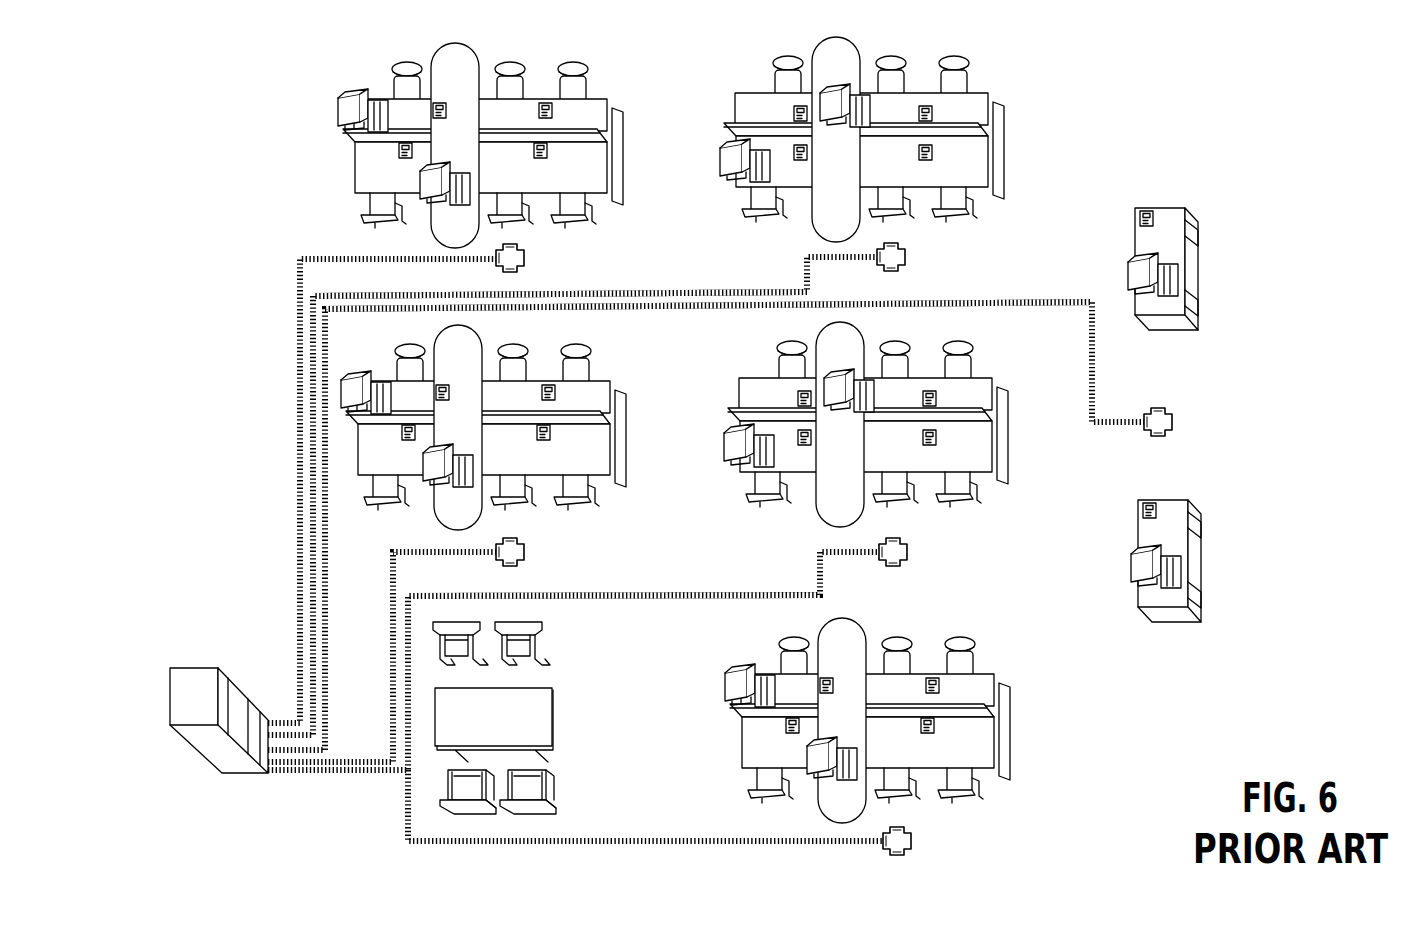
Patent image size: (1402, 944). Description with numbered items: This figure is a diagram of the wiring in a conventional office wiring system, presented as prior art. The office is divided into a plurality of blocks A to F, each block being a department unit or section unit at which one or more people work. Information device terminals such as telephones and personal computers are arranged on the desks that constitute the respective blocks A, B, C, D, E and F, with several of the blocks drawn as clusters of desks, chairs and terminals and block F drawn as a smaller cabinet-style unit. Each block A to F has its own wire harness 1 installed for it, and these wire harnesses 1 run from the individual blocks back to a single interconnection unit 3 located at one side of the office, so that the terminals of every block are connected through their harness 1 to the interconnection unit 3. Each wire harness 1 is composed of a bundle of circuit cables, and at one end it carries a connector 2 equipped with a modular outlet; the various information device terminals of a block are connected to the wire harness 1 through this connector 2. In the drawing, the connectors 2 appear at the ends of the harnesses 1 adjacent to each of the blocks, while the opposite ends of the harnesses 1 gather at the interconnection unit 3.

The wire harness 1 is at (321, 257).
The connector 2 is at (524, 258).
The interconnection unit 3 is at (228, 752).
The block A is at (1012, 105).
The block B is at (630, 122).
The block C is at (1013, 418).
The block D is at (628, 398).
The block E is at (1023, 661).
The block F is at (1235, 309).